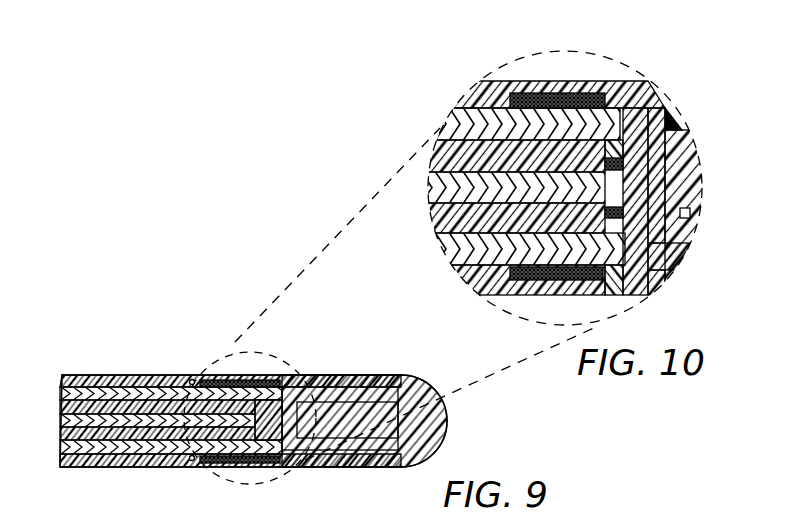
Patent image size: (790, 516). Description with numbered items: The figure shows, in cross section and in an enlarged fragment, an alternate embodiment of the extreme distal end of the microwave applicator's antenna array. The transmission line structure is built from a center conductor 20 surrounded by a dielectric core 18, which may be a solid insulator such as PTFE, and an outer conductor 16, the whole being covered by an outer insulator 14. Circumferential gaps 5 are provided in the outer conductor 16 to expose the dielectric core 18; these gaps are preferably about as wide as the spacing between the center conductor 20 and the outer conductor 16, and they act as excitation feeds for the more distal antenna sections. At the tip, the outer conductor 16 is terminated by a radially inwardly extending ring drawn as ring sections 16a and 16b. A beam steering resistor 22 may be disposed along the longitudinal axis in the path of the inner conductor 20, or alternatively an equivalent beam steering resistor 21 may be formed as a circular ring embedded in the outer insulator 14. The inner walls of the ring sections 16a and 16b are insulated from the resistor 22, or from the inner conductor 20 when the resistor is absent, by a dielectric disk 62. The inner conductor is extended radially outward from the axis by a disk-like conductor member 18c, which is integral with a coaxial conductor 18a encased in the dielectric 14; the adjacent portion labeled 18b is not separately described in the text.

In FIG. 10, the circumferential gap 5 is at (560, 147).
In FIG. 10, the outer insulator 14 is at (488, 82).
In FIG. 9, the outer insulator 14 is at (78, 466).
In FIG. 10, the outer conductor 16 is at (453, 110).
In FIG. 9, the outer conductor 16 is at (120, 393).
In FIG. 10, the ring section 16a is at (645, 290).
In FIG. 10, the ring section 16b is at (618, 140).
In FIG. 10, the dielectric core 18 is at (442, 150).
In FIG. 9, the dielectric core 18 is at (141, 405).
In FIG. 10, the coaxial conductor 18a is at (672, 122).
In FIG. 9, the coaxial conductor 18a is at (313, 392).
In FIG. 10, the lower edge portion of layer 18 18b is at (665, 257).
In FIG. 10, the disk-like conductor member 18c is at (660, 167).
In FIG. 10, the center conductor 20 is at (445, 182).
In FIG. 9, the center conductor 20 is at (85, 420).
In FIG. 10, the beam steering resistor 21 is at (538, 93).
In FIG. 9, the beam steering resistor 21 is at (215, 380).
In FIG. 10, the beam steering resistor 22 is at (570, 200).
In FIG. 9, the beam steering resistor 22 is at (257, 448).
In FIG. 10, the dielectric disk 62 is at (690, 214).